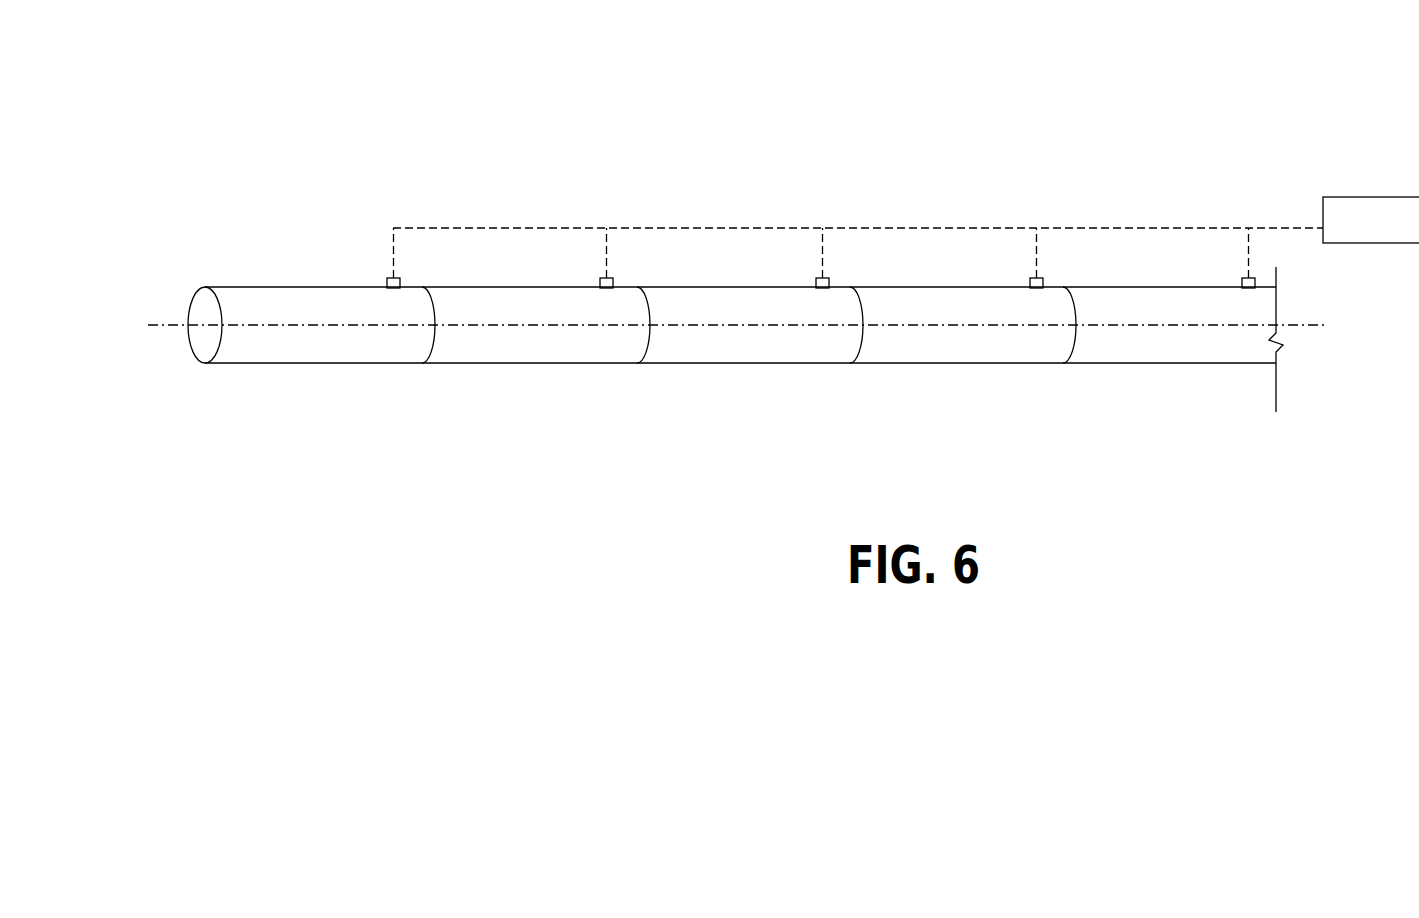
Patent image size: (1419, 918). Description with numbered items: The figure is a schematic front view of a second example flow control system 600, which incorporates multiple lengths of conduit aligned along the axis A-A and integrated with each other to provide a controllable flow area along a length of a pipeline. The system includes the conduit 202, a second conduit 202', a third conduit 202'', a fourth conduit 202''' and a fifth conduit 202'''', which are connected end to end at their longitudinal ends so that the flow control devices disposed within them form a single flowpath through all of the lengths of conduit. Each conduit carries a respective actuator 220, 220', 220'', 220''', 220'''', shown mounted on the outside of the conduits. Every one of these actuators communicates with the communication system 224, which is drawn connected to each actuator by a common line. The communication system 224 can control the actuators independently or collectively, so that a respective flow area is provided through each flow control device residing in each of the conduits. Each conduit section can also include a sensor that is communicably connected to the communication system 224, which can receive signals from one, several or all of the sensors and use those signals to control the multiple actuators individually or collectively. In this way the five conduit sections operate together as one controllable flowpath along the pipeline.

The second example flow control system 600 is at (432, 104).
The conduit 202 is at (311, 366).
The second conduit 202' is at (536, 366).
The third conduit 202'' is at (750, 366).
The fourth conduit 202''' is at (963, 366).
The fifth conduit 202'''' is at (1173, 356).
The actuator 220 is at (439, 258).
The actuator 220' is at (653, 258).
The actuator 220'' is at (870, 258).
The actuator 220''' is at (1085, 258).
The actuator 220'''' is at (1211, 258).
The communication system 224 is at (1393, 234).